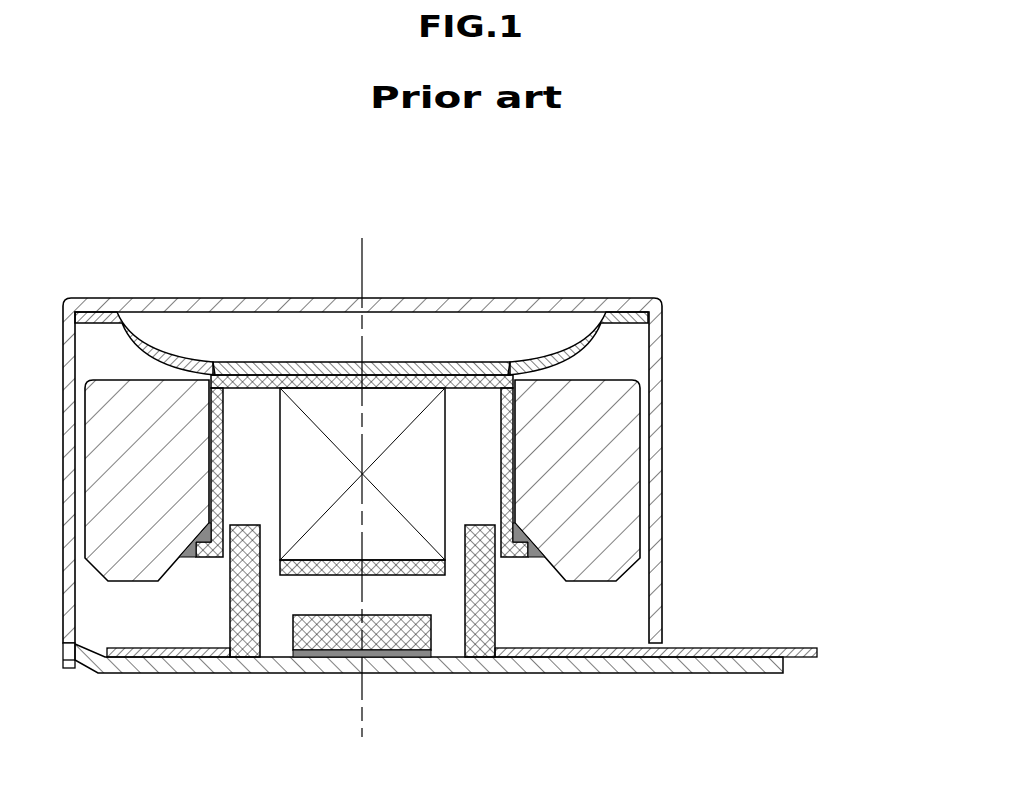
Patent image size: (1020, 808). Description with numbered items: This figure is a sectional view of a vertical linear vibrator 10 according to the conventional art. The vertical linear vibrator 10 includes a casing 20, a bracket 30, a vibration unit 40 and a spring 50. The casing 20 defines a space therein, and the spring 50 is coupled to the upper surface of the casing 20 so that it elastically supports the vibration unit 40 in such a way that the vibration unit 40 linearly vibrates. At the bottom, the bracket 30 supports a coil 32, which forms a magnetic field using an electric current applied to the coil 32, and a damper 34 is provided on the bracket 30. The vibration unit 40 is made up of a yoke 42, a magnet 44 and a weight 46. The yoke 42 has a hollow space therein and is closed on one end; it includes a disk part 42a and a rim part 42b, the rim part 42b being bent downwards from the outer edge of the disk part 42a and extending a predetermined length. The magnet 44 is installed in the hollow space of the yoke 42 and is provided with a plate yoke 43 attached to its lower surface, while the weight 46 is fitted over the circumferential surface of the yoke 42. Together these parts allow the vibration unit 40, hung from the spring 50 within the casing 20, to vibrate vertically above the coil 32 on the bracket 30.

The vertical linear vibrator 10 is at (98, 185).
The casing 20 is at (529, 303).
The bracket 30 is at (532, 664).
The coil 32 is at (246, 630).
The damper 34 is at (398, 640).
The vibration unit 40 is at (486, 483).
The yoke 42 is at (510, 452).
The disk part 42a is at (483, 375).
The rim part 42b is at (513, 458).
The plate yoke 43 is at (425, 565).
The magnet 44 is at (422, 492).
The weight 46 is at (588, 542).
The spring 50 is at (163, 354).